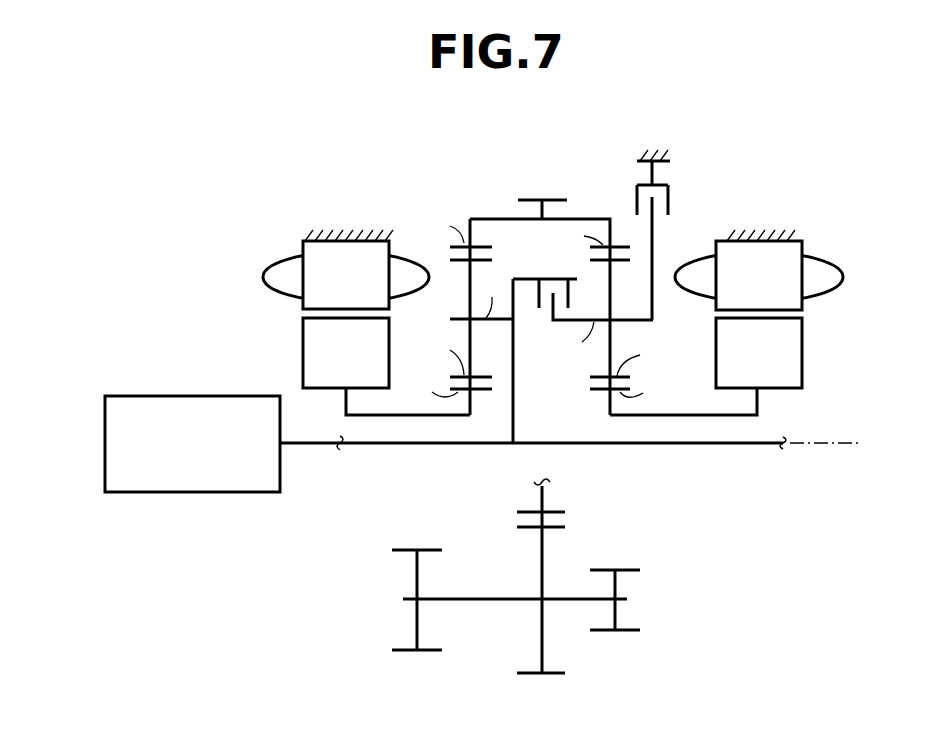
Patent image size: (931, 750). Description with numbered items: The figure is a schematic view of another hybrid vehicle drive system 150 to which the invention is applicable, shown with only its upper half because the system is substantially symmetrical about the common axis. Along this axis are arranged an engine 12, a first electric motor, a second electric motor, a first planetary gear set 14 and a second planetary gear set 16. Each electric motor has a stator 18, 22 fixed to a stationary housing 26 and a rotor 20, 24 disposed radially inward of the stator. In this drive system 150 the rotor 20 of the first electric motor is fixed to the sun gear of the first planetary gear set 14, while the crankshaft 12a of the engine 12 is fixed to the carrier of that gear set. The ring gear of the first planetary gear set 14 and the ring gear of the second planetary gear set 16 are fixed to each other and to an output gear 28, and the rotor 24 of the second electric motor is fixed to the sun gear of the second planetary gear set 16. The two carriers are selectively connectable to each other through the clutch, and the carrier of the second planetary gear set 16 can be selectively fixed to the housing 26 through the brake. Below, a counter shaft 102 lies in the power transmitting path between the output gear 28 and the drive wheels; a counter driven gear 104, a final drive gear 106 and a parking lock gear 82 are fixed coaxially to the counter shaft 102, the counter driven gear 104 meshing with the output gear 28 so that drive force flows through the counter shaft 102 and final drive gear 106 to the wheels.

The hybrid vehicle drive system 150 is at (724, 111).
The engine 12 is at (146, 402).
The crankshaft 12a is at (312, 447).
The first planetary gear set 14 is at (467, 206).
The second planetary gear set 16 is at (614, 206).
The stator 18 is at (307, 305).
The rotor 20 is at (307, 352).
The stator 22 is at (797, 306).
The rotor 24 is at (797, 353).
The housing 26 is at (355, 236).
The output gear 28 is at (540, 200).
The parking lock gear 82 is at (628, 569).
The counter shaft 102 is at (473, 603).
The counter driven gear 104 is at (535, 528).
The final drive gear 106 is at (405, 549).